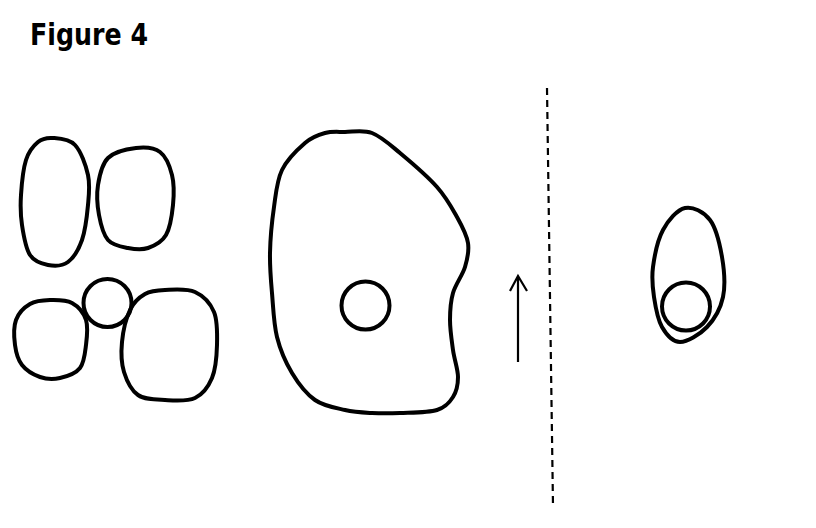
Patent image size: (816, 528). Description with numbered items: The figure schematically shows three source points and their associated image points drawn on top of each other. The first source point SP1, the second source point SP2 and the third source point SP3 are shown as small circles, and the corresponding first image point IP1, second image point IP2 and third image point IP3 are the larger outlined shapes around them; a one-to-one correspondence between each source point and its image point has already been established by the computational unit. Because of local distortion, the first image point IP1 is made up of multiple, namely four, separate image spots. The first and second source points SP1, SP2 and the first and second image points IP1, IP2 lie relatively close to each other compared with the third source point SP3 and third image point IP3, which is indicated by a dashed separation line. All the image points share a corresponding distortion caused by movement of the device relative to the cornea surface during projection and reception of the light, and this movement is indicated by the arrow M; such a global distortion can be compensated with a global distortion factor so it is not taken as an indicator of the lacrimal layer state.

The first image point IP1 is at (182, 322).
The first source point SP1 is at (108, 308).
The second image point IP2 is at (377, 162).
The second source point SP2 is at (370, 306).
The third image point IP3 is at (701, 222).
The third source point SP3 is at (686, 307).
The arrow indicating movement M is at (516, 295).